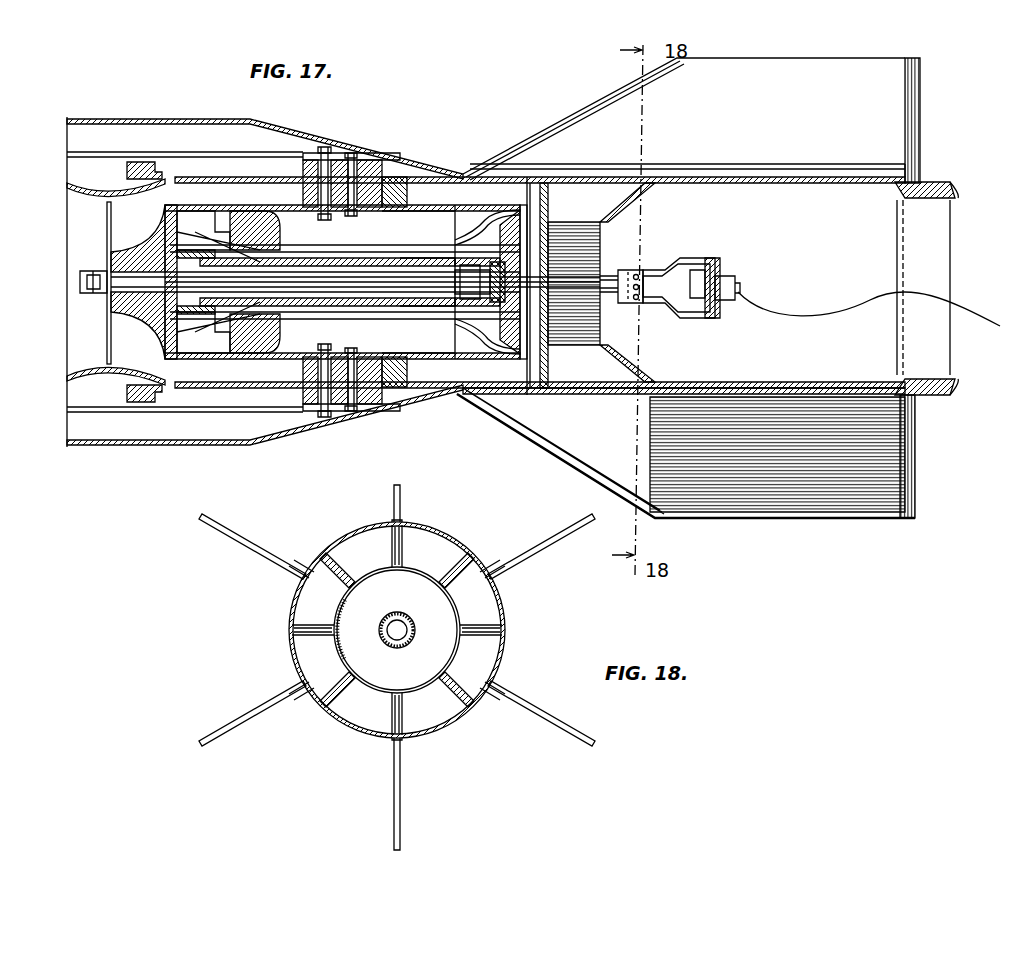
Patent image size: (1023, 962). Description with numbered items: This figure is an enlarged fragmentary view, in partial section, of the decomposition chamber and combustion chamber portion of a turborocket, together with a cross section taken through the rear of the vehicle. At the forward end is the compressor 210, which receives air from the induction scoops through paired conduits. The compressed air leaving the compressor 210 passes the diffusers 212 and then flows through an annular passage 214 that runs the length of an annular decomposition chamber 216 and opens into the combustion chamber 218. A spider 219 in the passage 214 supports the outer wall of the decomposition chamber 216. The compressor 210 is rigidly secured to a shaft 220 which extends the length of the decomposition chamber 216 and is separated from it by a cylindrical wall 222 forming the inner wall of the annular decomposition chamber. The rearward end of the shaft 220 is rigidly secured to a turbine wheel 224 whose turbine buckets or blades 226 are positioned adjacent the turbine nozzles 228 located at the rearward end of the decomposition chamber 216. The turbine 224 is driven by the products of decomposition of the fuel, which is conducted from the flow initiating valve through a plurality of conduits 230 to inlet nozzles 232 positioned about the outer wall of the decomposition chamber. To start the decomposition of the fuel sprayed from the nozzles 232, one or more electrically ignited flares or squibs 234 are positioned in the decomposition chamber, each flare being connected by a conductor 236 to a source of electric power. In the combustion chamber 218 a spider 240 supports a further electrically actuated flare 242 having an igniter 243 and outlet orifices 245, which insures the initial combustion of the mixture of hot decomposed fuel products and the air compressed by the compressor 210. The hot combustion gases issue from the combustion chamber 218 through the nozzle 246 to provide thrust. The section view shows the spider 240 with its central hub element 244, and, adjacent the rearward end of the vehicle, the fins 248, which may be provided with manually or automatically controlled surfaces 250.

In FIG. 17, the compressor 210 is at (105, 360).
In FIG. 17, the diffusers 212 is at (212, 380).
In FIG. 17, the annular passage 214 is at (288, 360).
In FIG. 17, the annular decomposition chamber 216 is at (420, 352).
In FIG. 17, the combustion chamber 218 is at (745, 375).
In FIG. 17, the spider 219 is at (413, 178).
In FIG. 17, the shaft 220 is at (465, 275).
In FIG. 17, the cylindrical wall 222 is at (396, 322).
In FIG. 17, the turbine wheel 224 is at (505, 318).
In FIG. 17, the turbine buckets or blades 226 is at (538, 312).
In FIG. 17, the turbine nozzles 228 is at (480, 222).
In FIG. 17, the conduits 230 is at (205, 150).
In FIG. 17, the inlet nozzles 232 is at (300, 200).
In FIG. 17, the electrically ignited flares or squibs 234 is at (400, 165).
In FIG. 17, the conductor 236 is at (355, 165).
In FIG. 17, the spider 240 is at (588, 222).
In FIG. 18, the spider 240 is at (365, 690).
In FIG. 17, the electrically actuated flare 242 is at (698, 262).
In FIG. 18, the electrically actuated flare 242 is at (395, 632).
In FIG. 17, the igniter 243 is at (730, 288).
In FIG. 18, the hub bore 244 is at (383, 640).
In FIG. 17, the outlet orifices 245 is at (635, 274).
In FIG. 17, the nozzle 246 is at (930, 188).
In FIG. 17, the fins 248 is at (873, 508).
In FIG. 18, the fins 248 is at (397, 780).
In FIG. 17, the control surfaces 250 is at (908, 520).